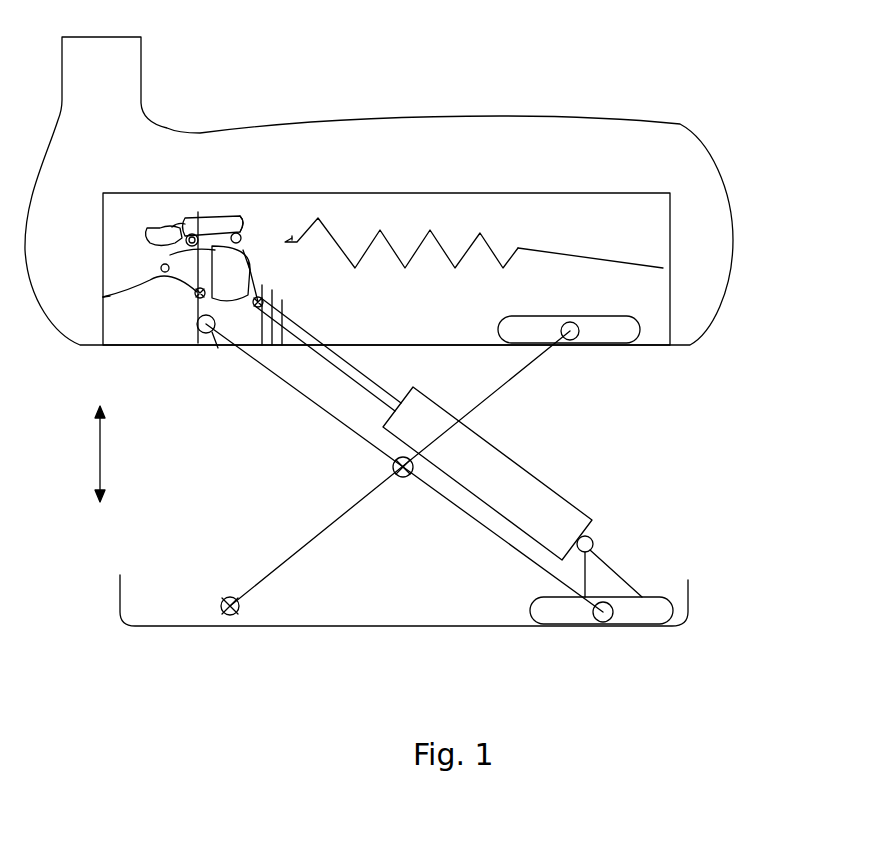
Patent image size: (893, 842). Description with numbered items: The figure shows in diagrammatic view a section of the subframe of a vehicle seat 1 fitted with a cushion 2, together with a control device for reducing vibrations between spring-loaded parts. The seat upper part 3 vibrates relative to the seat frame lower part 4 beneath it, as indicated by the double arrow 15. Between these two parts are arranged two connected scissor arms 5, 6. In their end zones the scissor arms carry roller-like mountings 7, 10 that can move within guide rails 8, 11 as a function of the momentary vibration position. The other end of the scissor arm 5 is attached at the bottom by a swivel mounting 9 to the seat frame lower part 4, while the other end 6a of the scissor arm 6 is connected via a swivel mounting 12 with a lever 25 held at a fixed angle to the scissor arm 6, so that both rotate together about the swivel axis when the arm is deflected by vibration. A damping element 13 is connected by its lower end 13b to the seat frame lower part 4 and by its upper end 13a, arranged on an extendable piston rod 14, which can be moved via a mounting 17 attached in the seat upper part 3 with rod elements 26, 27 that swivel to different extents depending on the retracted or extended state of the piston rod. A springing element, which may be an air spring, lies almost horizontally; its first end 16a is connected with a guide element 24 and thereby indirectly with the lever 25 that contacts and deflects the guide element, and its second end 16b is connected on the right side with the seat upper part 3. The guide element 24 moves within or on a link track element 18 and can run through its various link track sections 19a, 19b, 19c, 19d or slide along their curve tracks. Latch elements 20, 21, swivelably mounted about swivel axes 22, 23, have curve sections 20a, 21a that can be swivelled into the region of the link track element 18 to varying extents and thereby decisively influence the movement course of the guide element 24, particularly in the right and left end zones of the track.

The vehicle seat 1 is at (720, 448).
The cushion 2 is at (722, 252).
The seat upper part 3 is at (650, 338).
The seat frame lower part 4 is at (688, 590).
The scissor arm 5 is at (505, 385).
The scissor arm 6 is at (362, 437).
The end of scissor arm 6a is at (218, 352).
The roller-like mounting 7 is at (572, 342).
The guide rail 8 is at (608, 337).
The swivel mounting 9 is at (224, 597).
The roller-like mounting 10 is at (608, 620).
The guide rail 11 is at (652, 613).
The swivel mounting 12 is at (196, 336).
The damping element 13 is at (525, 482).
The upper end of damping element 13a is at (268, 295).
The lower end of damping element 13b is at (590, 538).
The piston rod 14 is at (383, 385).
The double arrow 15 is at (95, 446).
The first end of springing element 16a is at (292, 236).
The second end of springing element 16b is at (617, 258).
The mounting 17 is at (285, 346).
The link track element 18 is at (488, 240).
The link track section 19a is at (172, 227).
The link track section 19b is at (170, 255).
The link track section 19c is at (233, 215).
The link track section 19d is at (231, 267).
The latch element 20 is at (183, 291).
The curve section 20a is at (103, 297).
The latch element 21 is at (210, 215).
The curve section 21a is at (243, 231).
The swivel axis 22 is at (196, 212).
The swivel axis 23 is at (160, 272).
The guide element 24 is at (153, 236).
The lever 25 is at (208, 300).
The rod element 26 is at (262, 292).
The rod element 27 is at (248, 272).